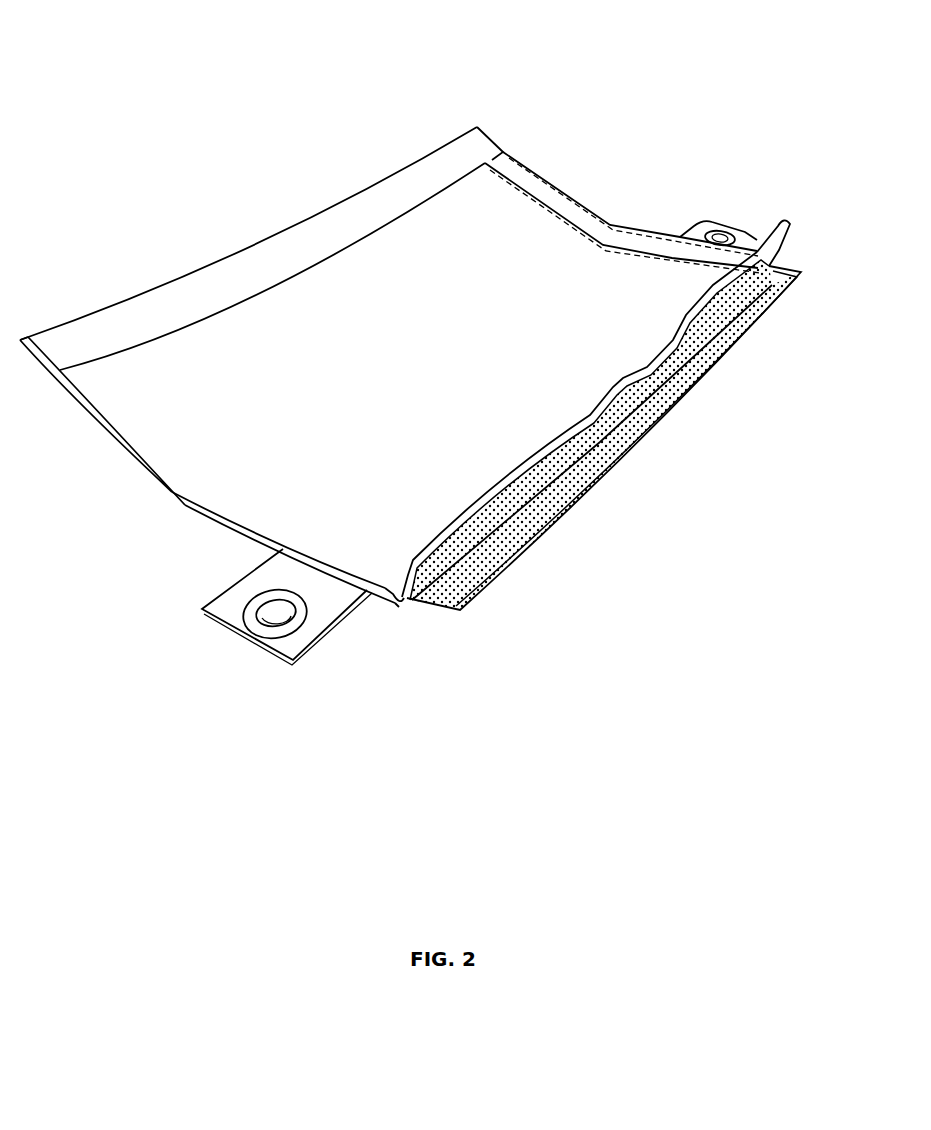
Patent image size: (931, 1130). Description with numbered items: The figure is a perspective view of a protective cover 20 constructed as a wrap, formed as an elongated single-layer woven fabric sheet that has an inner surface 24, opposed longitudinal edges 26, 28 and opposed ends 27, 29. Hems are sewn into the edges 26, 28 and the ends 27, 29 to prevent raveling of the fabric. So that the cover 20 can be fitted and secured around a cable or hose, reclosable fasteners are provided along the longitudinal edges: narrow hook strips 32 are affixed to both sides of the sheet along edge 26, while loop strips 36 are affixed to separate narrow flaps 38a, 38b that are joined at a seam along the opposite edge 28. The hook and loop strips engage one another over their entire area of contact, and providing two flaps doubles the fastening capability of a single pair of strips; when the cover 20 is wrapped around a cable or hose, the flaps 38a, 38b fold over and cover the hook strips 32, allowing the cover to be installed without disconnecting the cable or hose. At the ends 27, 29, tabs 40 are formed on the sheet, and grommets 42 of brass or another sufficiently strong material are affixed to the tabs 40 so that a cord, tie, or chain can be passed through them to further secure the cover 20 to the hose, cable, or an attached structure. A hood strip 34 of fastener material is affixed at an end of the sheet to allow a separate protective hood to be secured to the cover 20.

The protective cover 20 is at (405, 105).
The inner surface 24 is at (95, 403).
The longitudinal edge 26 is at (248, 245).
The end 27 is at (553, 180).
The longitudinal edge 28 is at (395, 592).
The end 29 is at (172, 493).
The hook strip 32 is at (480, 145).
The hood strip 34 is at (625, 252).
The loop strip 36 is at (762, 256).
The flap 38a is at (498, 490).
The flap 38b is at (458, 612).
The tab 40 is at (293, 662).
The grommet 42 is at (715, 230).